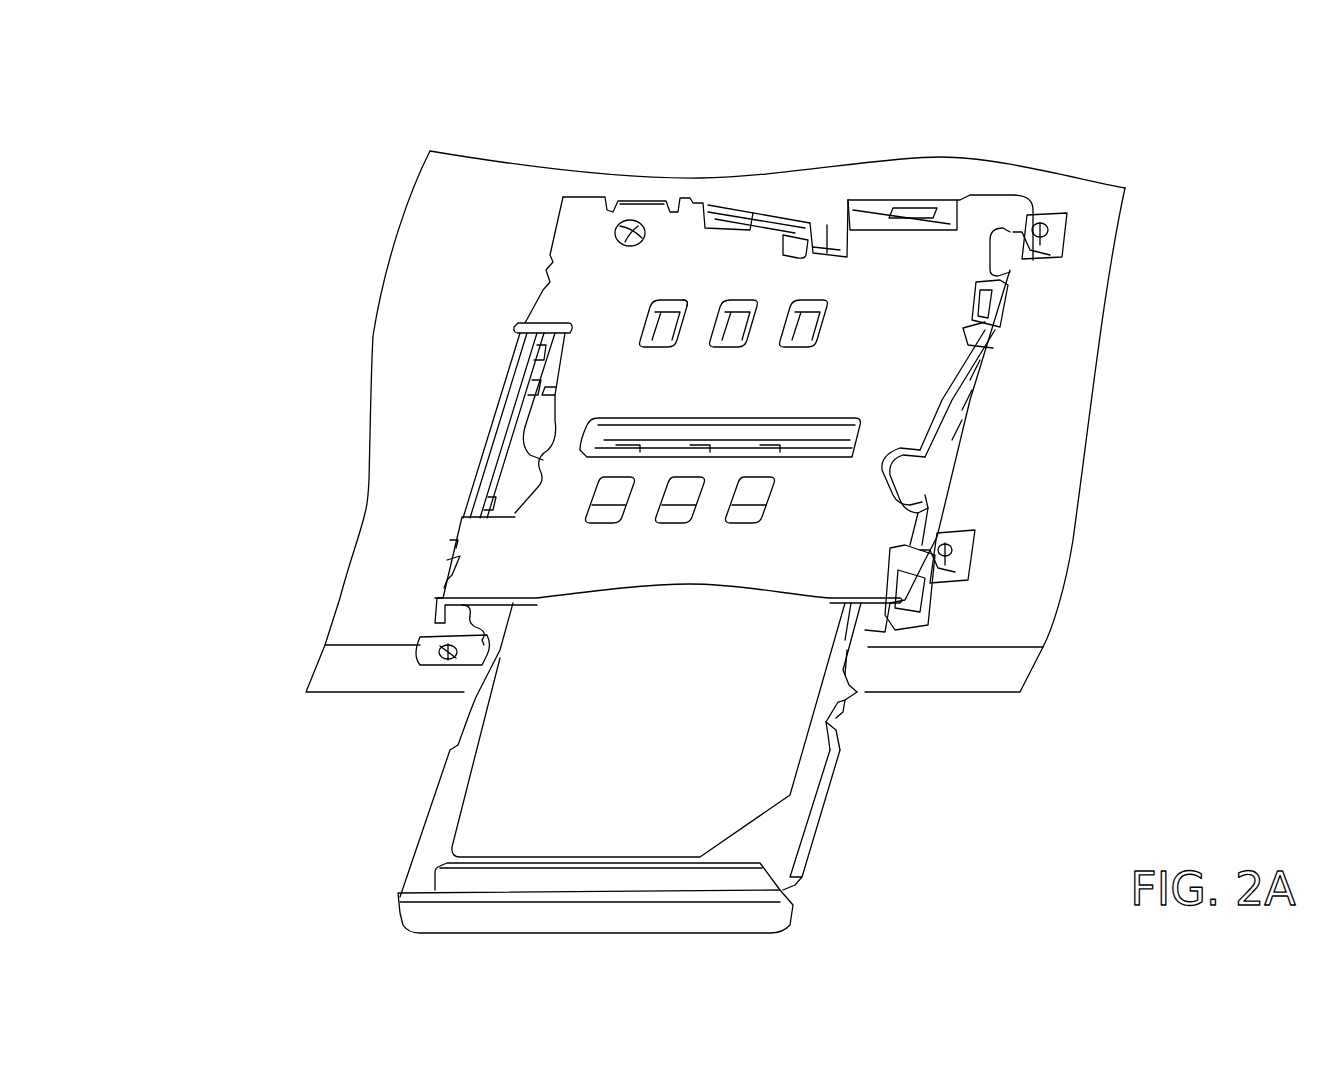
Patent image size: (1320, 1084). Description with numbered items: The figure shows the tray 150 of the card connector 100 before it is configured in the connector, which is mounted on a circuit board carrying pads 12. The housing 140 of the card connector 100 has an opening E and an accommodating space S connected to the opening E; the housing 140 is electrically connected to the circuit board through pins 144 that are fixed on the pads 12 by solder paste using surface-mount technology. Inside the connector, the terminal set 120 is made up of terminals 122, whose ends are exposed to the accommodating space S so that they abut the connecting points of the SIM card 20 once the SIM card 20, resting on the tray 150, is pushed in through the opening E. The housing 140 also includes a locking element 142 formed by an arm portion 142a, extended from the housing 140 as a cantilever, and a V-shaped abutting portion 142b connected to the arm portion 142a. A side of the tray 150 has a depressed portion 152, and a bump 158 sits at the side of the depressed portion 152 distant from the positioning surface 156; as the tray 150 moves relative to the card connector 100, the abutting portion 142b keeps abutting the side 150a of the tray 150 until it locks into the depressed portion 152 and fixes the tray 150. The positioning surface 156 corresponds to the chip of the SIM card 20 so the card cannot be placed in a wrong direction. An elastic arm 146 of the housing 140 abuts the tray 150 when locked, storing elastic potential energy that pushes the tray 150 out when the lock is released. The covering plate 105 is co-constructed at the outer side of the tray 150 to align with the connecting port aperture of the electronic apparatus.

The pads 12 is at (957, 567).
The SIM card 20 is at (480, 807).
The card connector 100 is at (770, 501).
The covering plate 105 is at (413, 913).
The terminal set 120 is at (779, 205).
The terminals 122 is at (740, 305).
The housing 140 is at (852, 413).
The locking element 142 is at (1075, 437).
The arm portion 142a is at (972, 405).
The abutting portion 142b is at (933, 477).
The pin 144 is at (947, 543).
The elastic arm 146 is at (753, 207).
The tray 150 is at (723, 771).
The side of the tray 150a is at (853, 668).
The depressed portion 152 is at (831, 731).
The positioning surface 156 is at (741, 824).
The bump 158 is at (853, 697).
The opening E is at (460, 631).
The accommodating space S is at (688, 305).